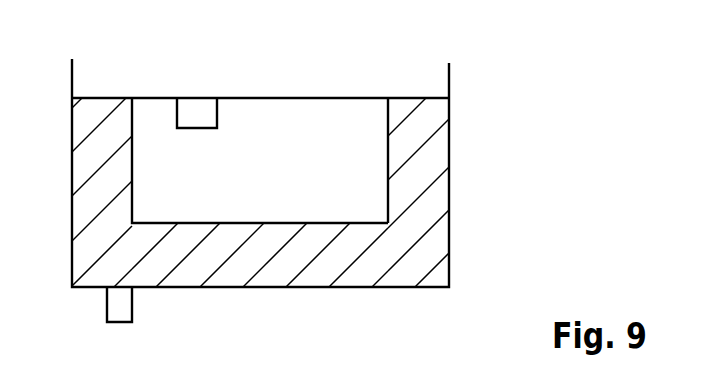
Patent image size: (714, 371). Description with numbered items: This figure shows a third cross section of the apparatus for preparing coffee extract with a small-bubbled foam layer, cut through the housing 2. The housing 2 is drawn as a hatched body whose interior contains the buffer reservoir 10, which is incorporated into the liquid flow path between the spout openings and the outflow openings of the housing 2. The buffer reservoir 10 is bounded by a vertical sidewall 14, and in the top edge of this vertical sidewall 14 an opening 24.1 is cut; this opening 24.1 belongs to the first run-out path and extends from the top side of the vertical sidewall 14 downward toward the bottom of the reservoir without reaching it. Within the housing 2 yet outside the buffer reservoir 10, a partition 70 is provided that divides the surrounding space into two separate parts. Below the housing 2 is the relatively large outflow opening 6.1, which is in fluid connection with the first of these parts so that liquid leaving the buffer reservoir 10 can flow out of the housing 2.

The housing 2 is at (449, 235).
The partition 70 is at (430, 160).
The vertical sidewall 14 is at (135, 202).
The opening 24.1 is at (198, 115).
The buffer reservoir 10 is at (290, 238).
The outflow opening 6.1 is at (122, 303).